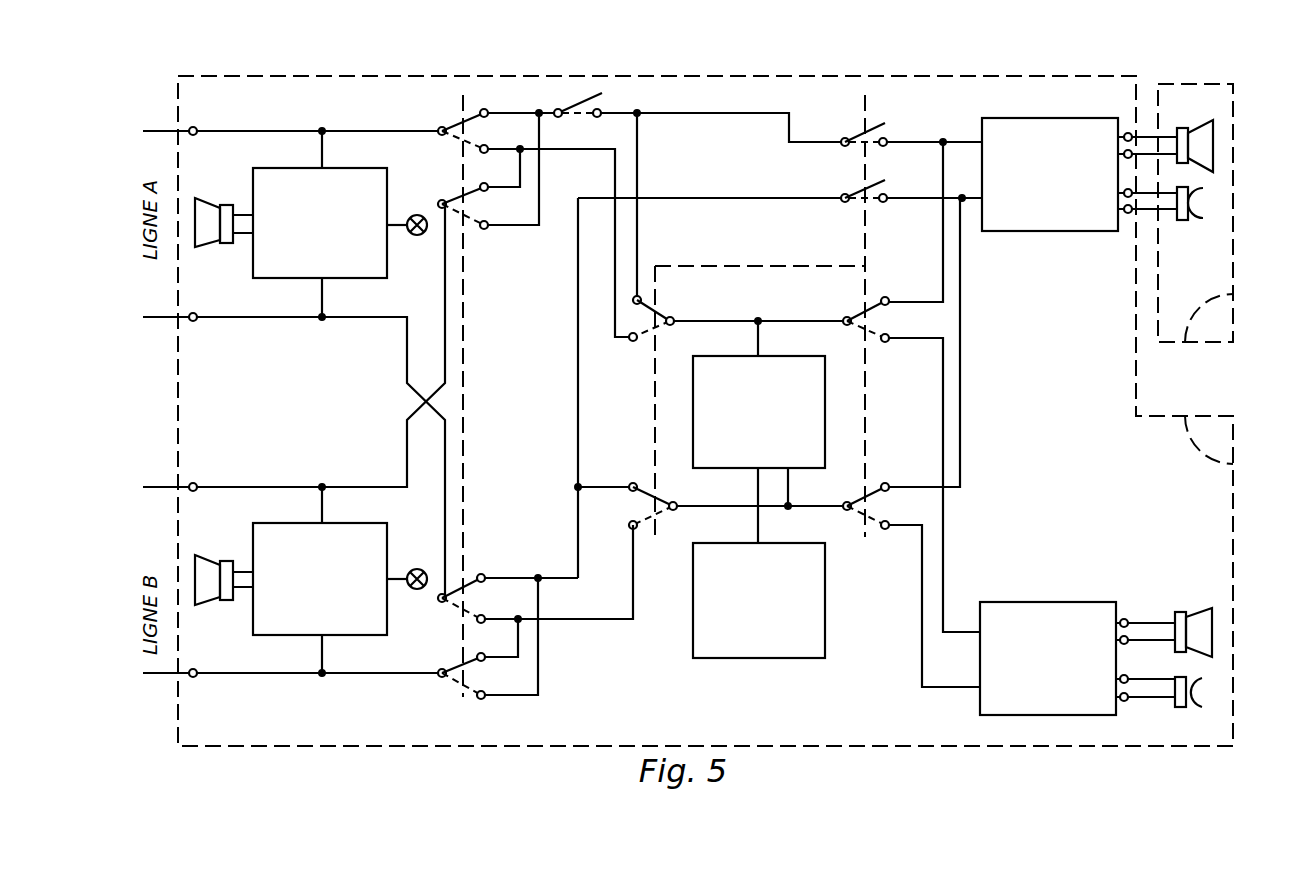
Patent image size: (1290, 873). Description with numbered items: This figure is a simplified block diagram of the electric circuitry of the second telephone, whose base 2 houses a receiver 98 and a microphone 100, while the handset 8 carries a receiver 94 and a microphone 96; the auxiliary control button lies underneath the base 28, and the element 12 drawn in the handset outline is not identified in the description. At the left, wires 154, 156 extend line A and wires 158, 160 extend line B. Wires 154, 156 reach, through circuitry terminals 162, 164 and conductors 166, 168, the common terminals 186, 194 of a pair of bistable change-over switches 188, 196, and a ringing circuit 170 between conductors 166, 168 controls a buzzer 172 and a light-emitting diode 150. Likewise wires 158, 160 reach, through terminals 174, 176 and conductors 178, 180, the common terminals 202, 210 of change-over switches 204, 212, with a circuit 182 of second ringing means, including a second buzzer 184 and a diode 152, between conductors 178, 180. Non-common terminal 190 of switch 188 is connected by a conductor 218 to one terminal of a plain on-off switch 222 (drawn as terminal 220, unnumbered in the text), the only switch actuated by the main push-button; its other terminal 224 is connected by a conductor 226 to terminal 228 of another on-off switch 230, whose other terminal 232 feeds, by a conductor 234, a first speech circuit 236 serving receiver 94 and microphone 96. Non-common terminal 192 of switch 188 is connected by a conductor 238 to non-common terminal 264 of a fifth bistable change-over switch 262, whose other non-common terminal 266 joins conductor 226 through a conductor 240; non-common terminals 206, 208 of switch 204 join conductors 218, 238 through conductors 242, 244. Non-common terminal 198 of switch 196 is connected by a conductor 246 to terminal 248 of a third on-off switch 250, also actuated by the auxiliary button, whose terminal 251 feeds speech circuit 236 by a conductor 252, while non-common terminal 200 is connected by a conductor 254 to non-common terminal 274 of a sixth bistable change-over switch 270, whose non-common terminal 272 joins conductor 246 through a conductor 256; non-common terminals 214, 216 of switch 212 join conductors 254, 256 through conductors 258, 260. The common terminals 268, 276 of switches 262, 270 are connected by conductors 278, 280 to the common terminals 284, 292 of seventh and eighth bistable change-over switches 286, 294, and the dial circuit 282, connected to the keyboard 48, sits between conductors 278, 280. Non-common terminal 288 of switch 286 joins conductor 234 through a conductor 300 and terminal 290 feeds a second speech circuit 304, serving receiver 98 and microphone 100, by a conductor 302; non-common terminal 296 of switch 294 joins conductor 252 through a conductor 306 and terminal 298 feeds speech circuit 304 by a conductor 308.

The base 2 is at (1144, 409).
The handset 8 is at (1245, 226).
The handset cradle 12 is at (1209, 318).
The base 28 is at (1209, 440).
The keyboard 48 is at (760, 657).
The receiver 94 is at (1207, 143).
The microphone 96 is at (1185, 201).
The receiver 98 is at (1207, 632).
The microphone 100 is at (1185, 691).
The light-emitting diode 150 is at (417, 237).
The diode 152 is at (417, 566).
The wire 154 is at (152, 126).
The wire 156 is at (158, 322).
The wire 158 is at (157, 492).
The wire 160 is at (157, 680).
The circuitry terminal 162 is at (197, 127).
The circuitry terminal 164 is at (197, 322).
The conductor 166 is at (288, 128).
The conductor 168 is at (292, 322).
The ringing circuit 170 is at (270, 277).
The buzzer 172 is at (206, 200).
The terminal 174 is at (197, 483).
The terminal 176 is at (197, 678).
The conductor 178 is at (290, 483).
The conductor 180 is at (278, 678).
The circuit of second ringing means 182 is at (385, 632).
The second buzzer 184 is at (206, 560).
The common terminal 186 is at (441, 126).
The bistable change-over switch 188 is at (473, 104).
The non-common terminal 190 is at (488, 110).
The non-common terminal 192 is at (476, 151).
The common terminal 194 is at (442, 603).
The bistable change-over switch 196 is at (469, 577).
The non-common terminal 198 is at (486, 574).
The non-common terminal 200 is at (485, 617).
The common terminal 202 is at (443, 211).
The bistable change-over switch 204 is at (475, 233).
The non-common terminal 206 is at (476, 186).
The non-common terminal 208 is at (489, 229).
The common terminal 210 is at (440, 676).
The bistable change-over switch 212 is at (460, 688).
The non-common terminal 214 is at (484, 656).
The non-common terminal 216 is at (485, 698).
The conductor 218 is at (530, 110).
The fixed contact 220 is at (564, 119).
The plain on-off switch 222 is at (605, 100).
The terminal 224 is at (606, 109).
The conductor 226 is at (789, 130).
The terminal 228 is at (845, 137).
The plain on-off switch 230 is at (857, 150).
The terminal 232 is at (888, 137).
The conductor 234 is at (928, 141).
The first speech circuit 236 is at (1090, 233).
The conductor 238 is at (572, 153).
The conductor 240 is at (640, 153).
The conductor 242 is at (515, 189).
The conductor 244 is at (542, 218).
The conductor 246 is at (576, 377).
The terminal 248 is at (843, 205).
The third on-off switch 250 is at (872, 207).
The terminal 251 is at (888, 195).
The conductor 252 is at (910, 201).
The conductor 254 is at (631, 588).
The conductor 256 is at (600, 486).
The conductor 258 is at (522, 639).
The conductor 260 is at (540, 680).
The fifth bistable change-over switch 262 is at (667, 330).
The non-common terminal 264 is at (633, 345).
The non-common terminal 266 is at (642, 299).
The common terminal 268 is at (678, 318).
The sixth bistable change-over switch 270 is at (661, 520).
The non-common terminal 272 is at (633, 484).
The non-common terminal 274 is at (630, 530).
The common terminal 276 is at (680, 511).
The conductor 278 is at (798, 320).
The conductor 280 is at (827, 511).
The dial circuit 282 is at (750, 462).
The common terminal 284 is at (843, 326).
The seventh bistable change-over switch 286 is at (881, 349).
The non-common terminal 288 is at (888, 299).
The non-common terminal 290 is at (889, 337).
The common terminal 292 is at (845, 502).
The eighth bistable change-over switch 294 is at (866, 522).
The non-common terminal 296 is at (887, 484).
The non-common terminal 298 is at (887, 530).
The conductor 300 is at (946, 258).
The conductor 302 is at (945, 529).
The second speech circuit 304 is at (1040, 607).
The conductor 306 is at (962, 418).
The conductor 308 is at (920, 645).